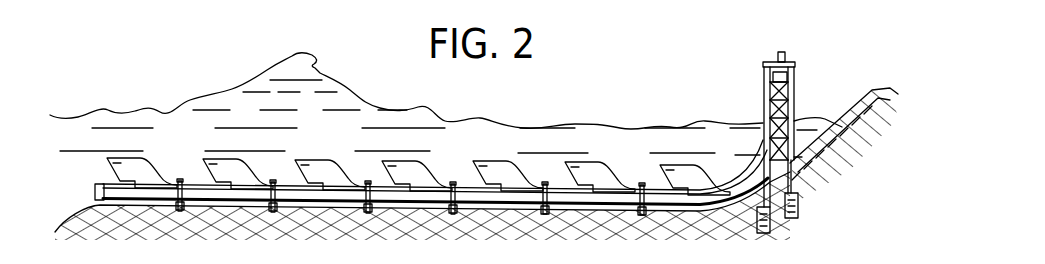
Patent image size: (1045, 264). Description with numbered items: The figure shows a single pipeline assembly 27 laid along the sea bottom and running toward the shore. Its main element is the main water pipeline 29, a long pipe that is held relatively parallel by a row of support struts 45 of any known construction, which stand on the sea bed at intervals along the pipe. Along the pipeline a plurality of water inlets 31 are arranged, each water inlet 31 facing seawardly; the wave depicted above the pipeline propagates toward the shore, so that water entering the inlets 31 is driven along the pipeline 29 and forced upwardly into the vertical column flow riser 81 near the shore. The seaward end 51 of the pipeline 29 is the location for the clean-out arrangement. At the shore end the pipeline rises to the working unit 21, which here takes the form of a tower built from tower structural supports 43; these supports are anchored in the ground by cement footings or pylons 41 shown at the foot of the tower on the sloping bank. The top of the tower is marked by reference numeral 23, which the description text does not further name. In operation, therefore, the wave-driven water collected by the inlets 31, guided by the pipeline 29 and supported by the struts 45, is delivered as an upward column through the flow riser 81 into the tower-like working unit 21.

The working unit 21 is at (746, 69).
The tower top cap 23 is at (796, 67).
The pipeline assembly 27 is at (440, 157).
The main water pipeline 29 is at (353, 195).
The water inlet 31 is at (588, 172).
The cement footings or pylons 41 is at (799, 200).
The tower structural supports 43 is at (797, 99).
The support struts 45 is at (175, 182).
The end of the pipeline 51 is at (90, 186).
The vertical column flow riser 81 is at (768, 112).